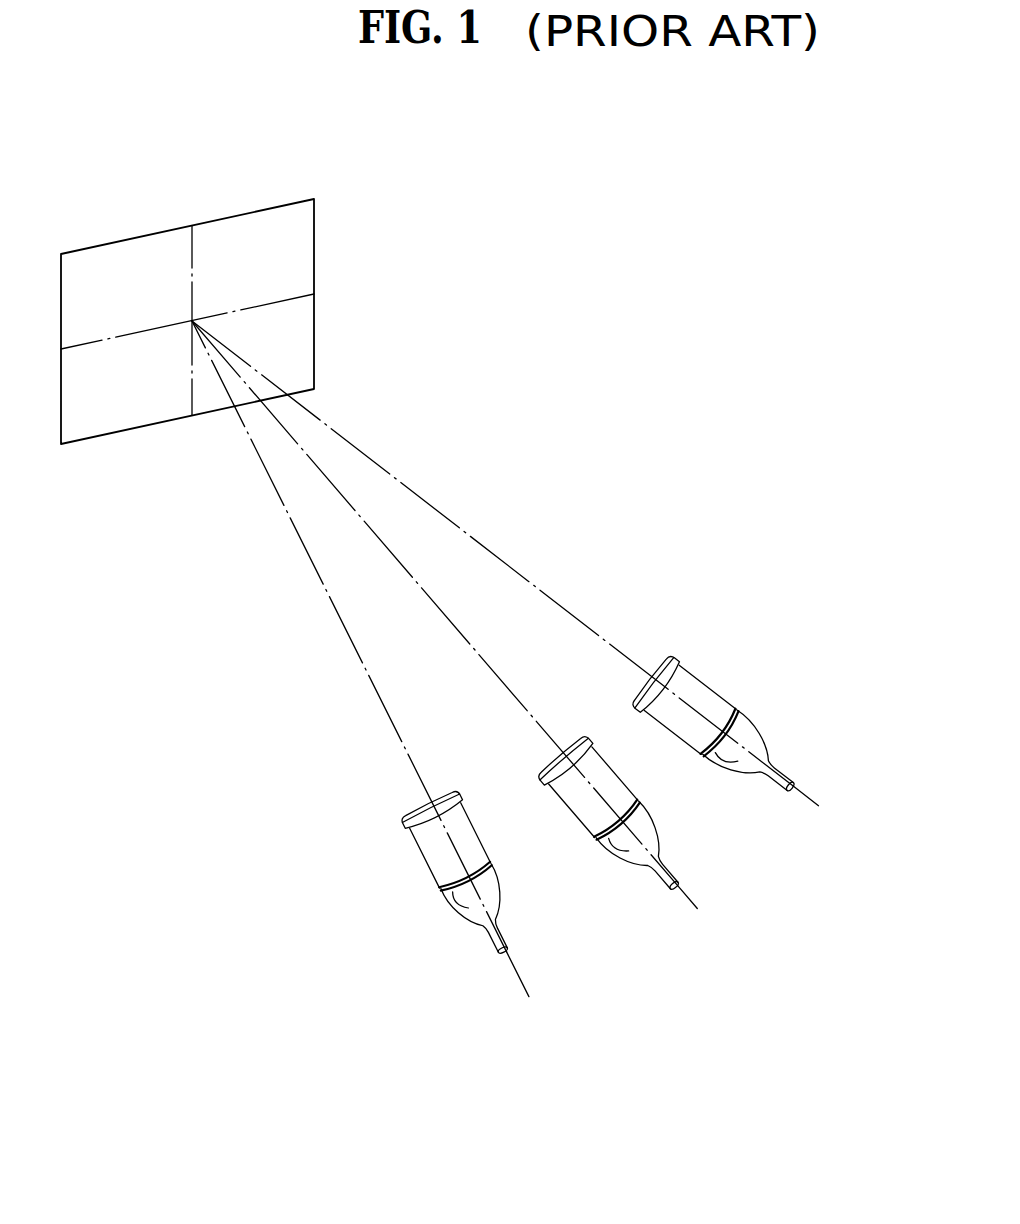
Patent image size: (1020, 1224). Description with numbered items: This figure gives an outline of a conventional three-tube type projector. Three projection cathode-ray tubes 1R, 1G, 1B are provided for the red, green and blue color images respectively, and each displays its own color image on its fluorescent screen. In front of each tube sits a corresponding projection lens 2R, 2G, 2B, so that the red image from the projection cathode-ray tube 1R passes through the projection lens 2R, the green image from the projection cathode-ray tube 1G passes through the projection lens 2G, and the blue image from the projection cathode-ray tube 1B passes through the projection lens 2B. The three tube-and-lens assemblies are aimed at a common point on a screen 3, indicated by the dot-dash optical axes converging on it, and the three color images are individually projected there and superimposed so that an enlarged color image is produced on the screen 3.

The screen 3 is at (314, 305).
The projection cathode-ray tube for red color images 1R is at (458, 912).
The projection cathode-ray tube for green color images 1G is at (628, 852).
The projection cathode-ray tube for blue color images 1B is at (753, 738).
The projection lens for red color images 2R is at (425, 847).
The projection lens for green color images 2G is at (592, 817).
The projection lens for blue color images 2B is at (707, 693).